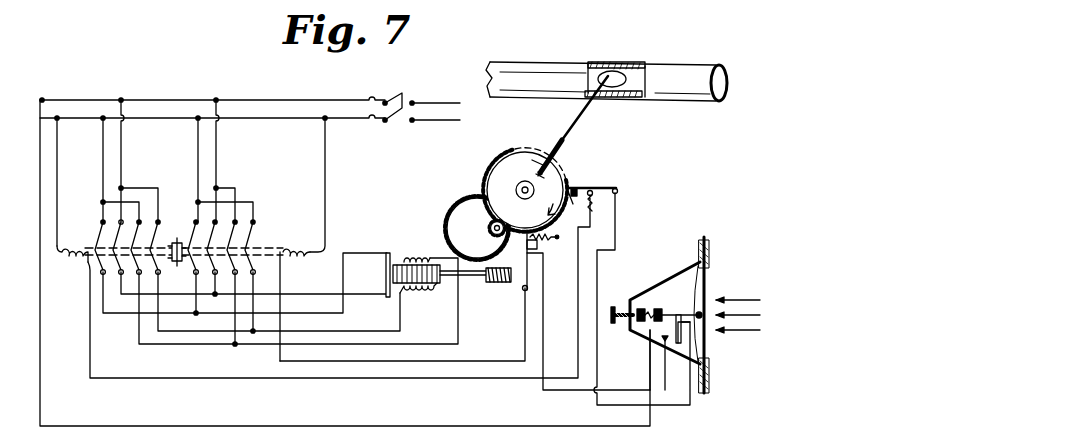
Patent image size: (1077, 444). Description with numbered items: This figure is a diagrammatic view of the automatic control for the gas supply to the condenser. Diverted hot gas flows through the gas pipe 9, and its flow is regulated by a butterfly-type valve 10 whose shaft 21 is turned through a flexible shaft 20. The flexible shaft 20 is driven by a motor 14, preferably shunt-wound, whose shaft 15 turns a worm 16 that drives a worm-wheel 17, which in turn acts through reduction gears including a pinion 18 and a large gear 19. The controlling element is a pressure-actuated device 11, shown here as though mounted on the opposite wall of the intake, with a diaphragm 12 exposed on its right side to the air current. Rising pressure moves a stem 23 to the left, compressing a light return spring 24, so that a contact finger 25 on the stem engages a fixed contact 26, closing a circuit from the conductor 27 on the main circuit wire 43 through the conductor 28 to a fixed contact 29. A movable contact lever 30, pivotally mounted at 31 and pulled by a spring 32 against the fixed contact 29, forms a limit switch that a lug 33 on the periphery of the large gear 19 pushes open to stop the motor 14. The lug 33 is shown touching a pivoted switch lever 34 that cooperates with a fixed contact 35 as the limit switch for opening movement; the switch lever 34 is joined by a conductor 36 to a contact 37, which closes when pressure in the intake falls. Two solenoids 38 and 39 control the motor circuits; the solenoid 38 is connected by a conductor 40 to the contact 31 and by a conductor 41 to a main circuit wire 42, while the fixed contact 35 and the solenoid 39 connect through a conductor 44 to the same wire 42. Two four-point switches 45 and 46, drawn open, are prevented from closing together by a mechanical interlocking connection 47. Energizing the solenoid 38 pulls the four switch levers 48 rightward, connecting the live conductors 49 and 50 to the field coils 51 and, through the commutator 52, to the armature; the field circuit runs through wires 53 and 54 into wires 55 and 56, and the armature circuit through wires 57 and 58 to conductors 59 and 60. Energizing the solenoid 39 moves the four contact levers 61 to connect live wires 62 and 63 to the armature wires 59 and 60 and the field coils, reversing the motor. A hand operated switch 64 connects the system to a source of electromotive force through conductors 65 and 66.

The gas pipe 9 is at (690, 68).
The valve 10 is at (636, 64).
The pressure-actuated device 11 is at (710, 275).
The diaphragm 12 is at (700, 345).
The motor 14 is at (425, 254).
The shaft 15 is at (474, 277).
The worm 16 is at (494, 283).
The worm-wheel 17 is at (470, 195).
The pinion 18 is at (489, 228).
The large gear 19 is at (512, 158).
The flexible shaft 20 is at (562, 152).
The shaft of the valve 21 is at (596, 98).
The stem 23 is at (670, 308).
The return spring 24 is at (646, 306).
The contact finger 25 is at (683, 327).
The fixed contact 26 is at (660, 345).
The conductor 27 is at (612, 426).
The conductor 28 is at (586, 390).
The fixed contact 29 is at (537, 253).
The contact lever 30 is at (530, 270).
The pivot 31 is at (528, 290).
The spring 32 is at (548, 243).
The lug 33 is at (576, 204).
The switch lever 34 is at (583, 186).
The fixed contact 35 is at (600, 212).
The conductor 36 is at (597, 276).
The contact 37 is at (704, 358).
The solenoid 38 is at (297, 250).
The solenoid 39 is at (70, 259).
The conductor 40 is at (485, 361).
The conductor 41 is at (327, 176).
The main circuit wire 42 is at (310, 120).
The main circuit wire 43 is at (274, 101).
The conductor 44 is at (58, 188).
The 4-point switch 45 is at (115, 236).
The 4-point switch 46 is at (235, 237).
The mechanical interlocking connection 47 is at (177, 240).
The switch levers 48 is at (246, 246).
The live conductor 49 is at (196, 152).
The live conductor 50 is at (218, 152).
The field coils 51 is at (420, 292).
The commutator 52 is at (386, 250).
The wire 53 is at (232, 319).
The wire 54 is at (263, 282).
The wire 55 is at (196, 344).
The wire 56 is at (235, 345).
The wire 57 is at (196, 283).
The wire 58 is at (212, 299).
The armature circuit wire 59 is at (313, 282).
The armature circuit wire 60 is at (343, 313).
The contact levers 61 is at (84, 243).
The live wire 62 is at (102, 143).
The live wire 63 is at (123, 145).
The hand operated switch 64 is at (393, 98).
The conductor 65 is at (442, 96).
The conductor 66 is at (441, 122).